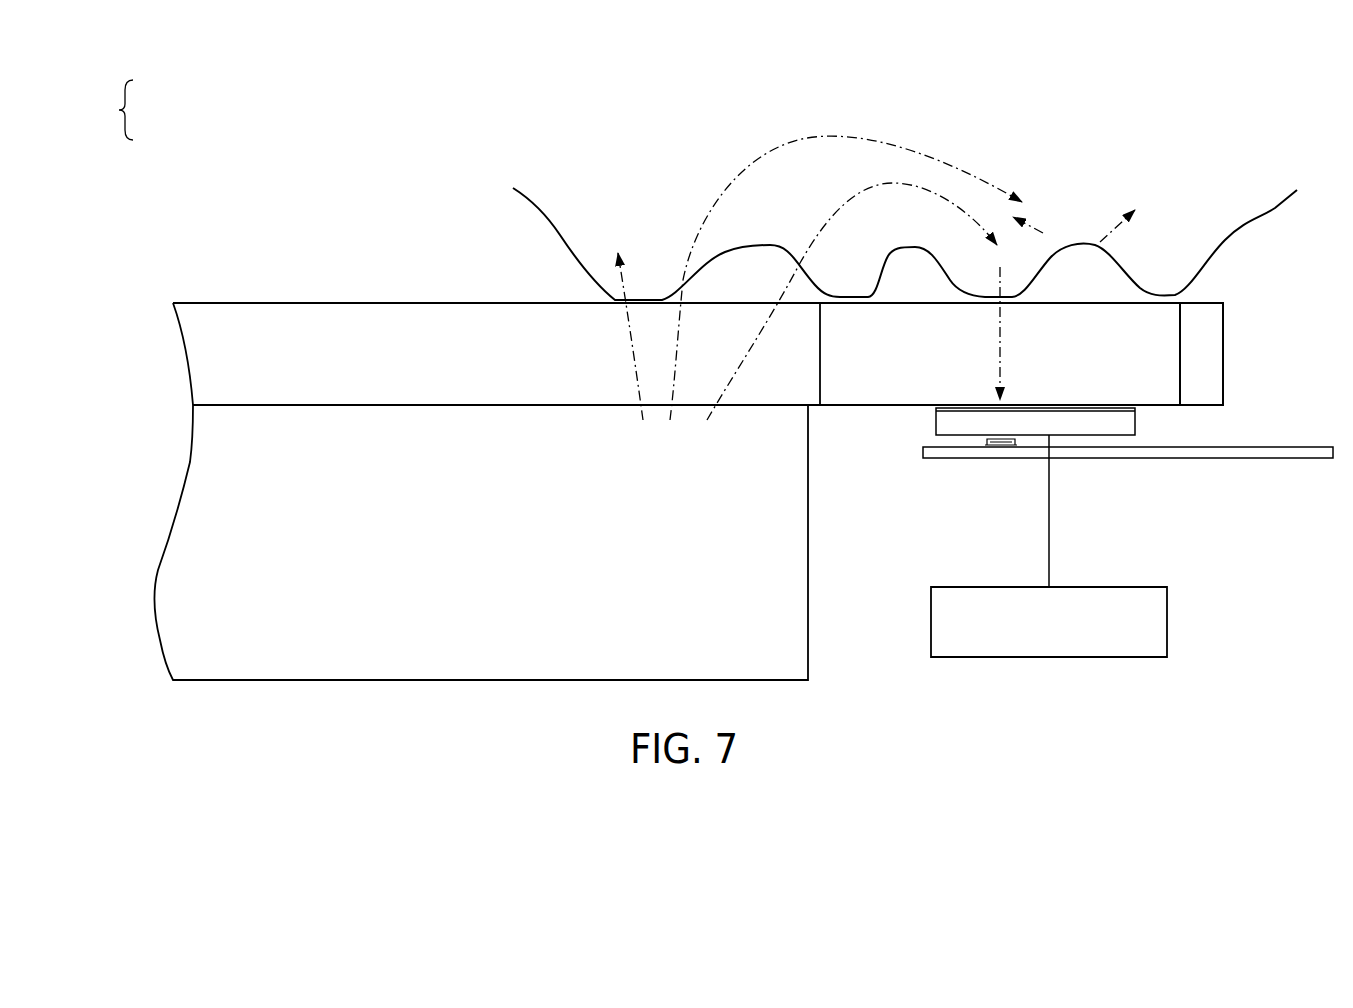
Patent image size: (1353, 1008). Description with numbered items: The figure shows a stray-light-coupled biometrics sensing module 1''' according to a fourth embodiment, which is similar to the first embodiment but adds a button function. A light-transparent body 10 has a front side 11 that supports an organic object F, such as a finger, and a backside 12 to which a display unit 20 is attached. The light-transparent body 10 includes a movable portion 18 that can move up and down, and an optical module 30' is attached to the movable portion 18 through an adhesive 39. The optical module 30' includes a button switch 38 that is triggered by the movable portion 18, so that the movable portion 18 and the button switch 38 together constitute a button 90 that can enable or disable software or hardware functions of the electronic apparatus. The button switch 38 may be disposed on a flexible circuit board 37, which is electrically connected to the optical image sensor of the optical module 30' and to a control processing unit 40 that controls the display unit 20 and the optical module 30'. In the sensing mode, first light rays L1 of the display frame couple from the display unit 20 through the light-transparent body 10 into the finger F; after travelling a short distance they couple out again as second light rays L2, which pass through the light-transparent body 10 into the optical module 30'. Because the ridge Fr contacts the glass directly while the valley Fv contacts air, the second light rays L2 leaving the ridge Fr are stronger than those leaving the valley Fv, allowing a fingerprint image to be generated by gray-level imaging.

The stray-light-coupled biometrics sensing module 1''' is at (245, 113).
The light-transparent body 10 is at (242, 330).
The front side 11 is at (412, 303).
The backside 12 is at (1213, 408).
The movable portion 18 is at (1162, 362).
The display unit 20 is at (190, 612).
The optical module 30' is at (1027, 511).
The flexible circuit board 37 is at (1270, 450).
The button switch 38 is at (990, 447).
The adhesive 39 is at (1137, 407).
The control processing unit 40 is at (1150, 625).
The button 90 is at (128, 110).
The organic object F is at (552, 223).
The valley Fv is at (1080, 243).
The ridge Fr is at (1172, 295).
The first light rays L1 is at (635, 373).
The second light rays L2 is at (1000, 352).